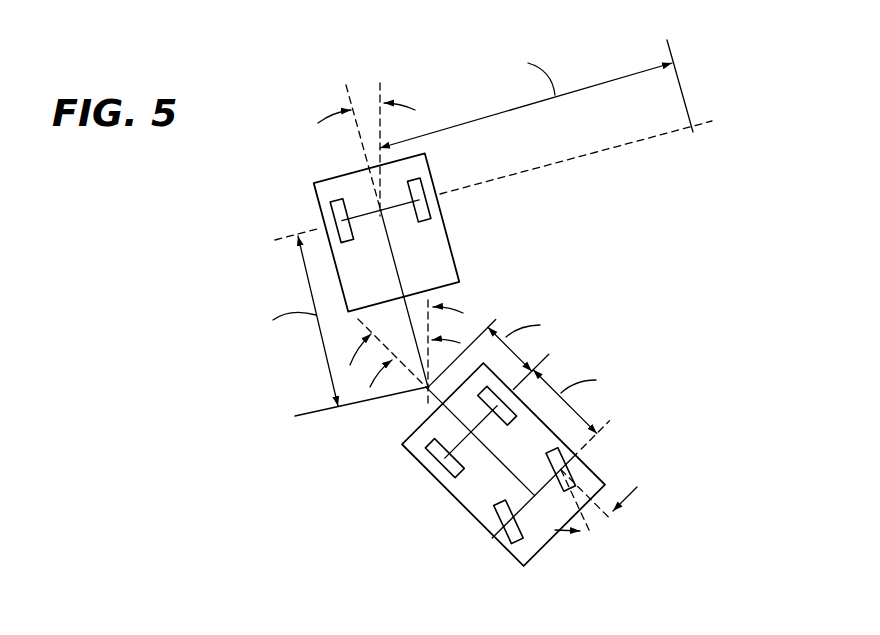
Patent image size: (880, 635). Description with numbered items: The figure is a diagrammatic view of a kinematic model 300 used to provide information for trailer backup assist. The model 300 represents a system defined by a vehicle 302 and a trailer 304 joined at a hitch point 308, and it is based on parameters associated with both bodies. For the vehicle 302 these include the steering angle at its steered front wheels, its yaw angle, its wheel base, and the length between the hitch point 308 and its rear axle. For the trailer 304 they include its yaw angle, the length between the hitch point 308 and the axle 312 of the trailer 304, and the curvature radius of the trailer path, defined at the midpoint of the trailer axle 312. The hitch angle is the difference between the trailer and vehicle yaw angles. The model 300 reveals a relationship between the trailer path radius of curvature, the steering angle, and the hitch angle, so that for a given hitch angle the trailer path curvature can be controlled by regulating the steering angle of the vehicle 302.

The kinematic model 300 is at (216, 247).
The vehicle 302 is at (598, 473).
The trailer 304 is at (313, 183).
The hitch point 308 is at (426, 388).
The axle 312 is at (387, 209).